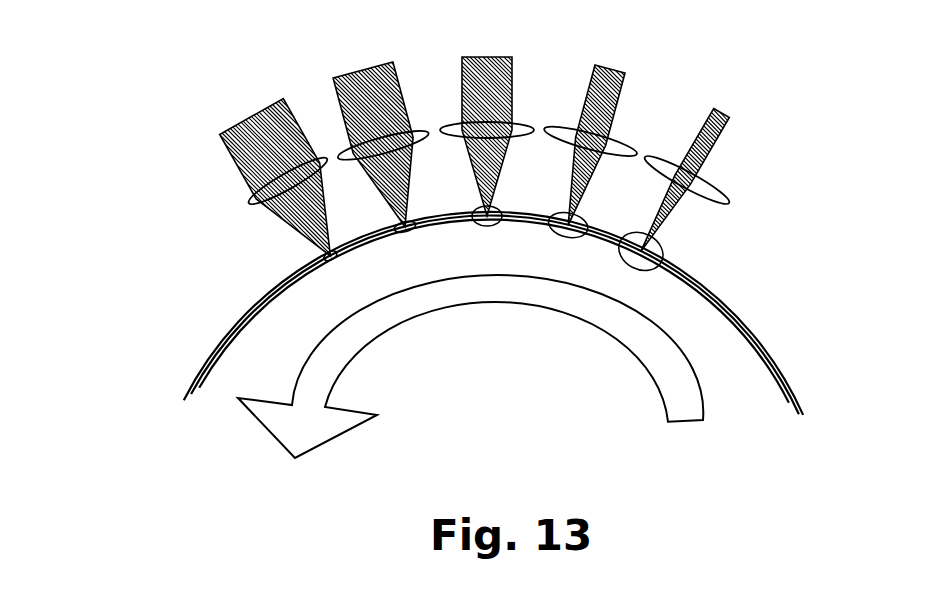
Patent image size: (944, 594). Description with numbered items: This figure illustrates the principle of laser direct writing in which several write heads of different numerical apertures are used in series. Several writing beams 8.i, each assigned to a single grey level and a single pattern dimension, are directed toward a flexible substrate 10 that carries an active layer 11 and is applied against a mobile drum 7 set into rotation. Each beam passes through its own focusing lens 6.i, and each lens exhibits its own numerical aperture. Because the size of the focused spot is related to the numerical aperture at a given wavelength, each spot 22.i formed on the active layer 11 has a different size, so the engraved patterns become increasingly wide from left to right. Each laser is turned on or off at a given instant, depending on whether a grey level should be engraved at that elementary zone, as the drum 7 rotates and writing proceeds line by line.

The focusing lens 6.i is at (475, 128).
The writing beam 8.i is at (490, 78).
The drum 7 is at (443, 313).
The active layer 11 is at (707, 292).
The flexible substrate 10 is at (757, 352).
The spot 22.i is at (489, 222).